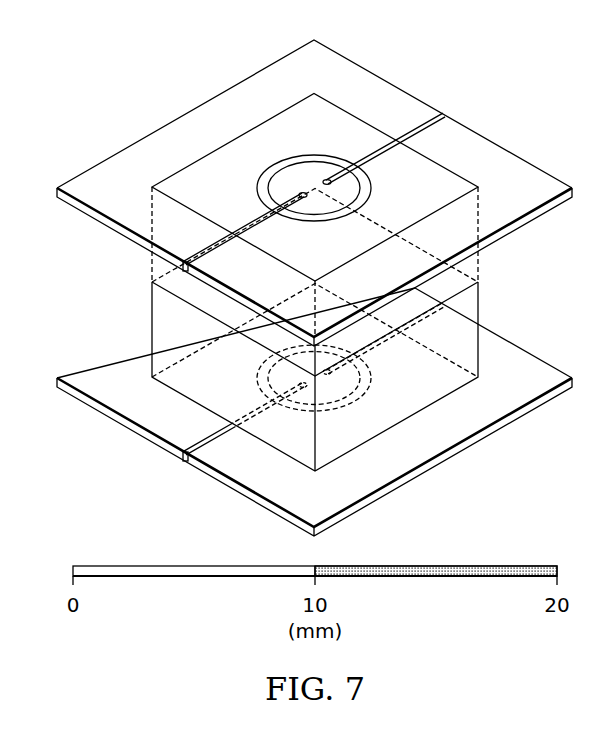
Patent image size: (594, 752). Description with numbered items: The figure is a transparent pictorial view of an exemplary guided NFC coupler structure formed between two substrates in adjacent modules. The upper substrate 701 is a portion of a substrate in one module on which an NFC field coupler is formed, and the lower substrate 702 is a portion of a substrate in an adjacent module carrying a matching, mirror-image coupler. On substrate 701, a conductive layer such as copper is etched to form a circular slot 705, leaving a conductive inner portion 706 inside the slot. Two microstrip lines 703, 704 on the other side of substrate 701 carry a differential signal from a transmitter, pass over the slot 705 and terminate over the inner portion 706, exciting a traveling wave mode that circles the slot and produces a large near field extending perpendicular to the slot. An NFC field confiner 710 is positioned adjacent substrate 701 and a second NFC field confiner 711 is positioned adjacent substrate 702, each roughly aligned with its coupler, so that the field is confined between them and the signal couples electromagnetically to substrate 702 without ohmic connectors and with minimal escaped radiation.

The substrate 701 is at (135, 153).
The substrate 702 is at (102, 362).
The microstrip line 703 is at (250, 226).
The microstrip line 704 is at (373, 158).
The circular slot 705 is at (368, 188).
The conductive inner portion 706 is at (317, 208).
The NFC field confiner 710 is at (158, 272).
The NFC field confiner 711 is at (158, 300).